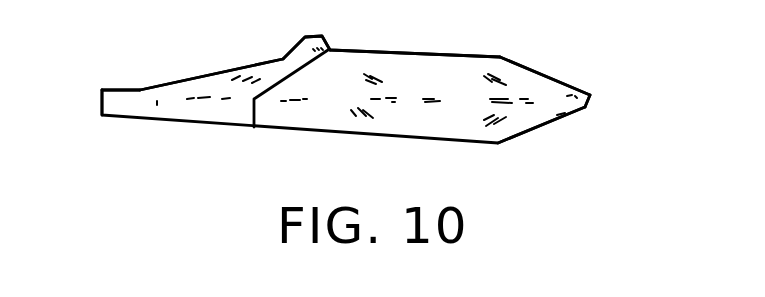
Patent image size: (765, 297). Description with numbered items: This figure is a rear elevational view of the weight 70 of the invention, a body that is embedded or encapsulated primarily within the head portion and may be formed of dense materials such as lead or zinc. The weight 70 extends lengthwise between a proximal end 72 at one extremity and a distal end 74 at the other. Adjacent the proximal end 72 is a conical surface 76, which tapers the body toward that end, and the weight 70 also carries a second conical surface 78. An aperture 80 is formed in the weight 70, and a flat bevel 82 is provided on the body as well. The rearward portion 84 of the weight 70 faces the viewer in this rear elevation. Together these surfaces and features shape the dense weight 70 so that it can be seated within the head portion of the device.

The weight 70 is at (455, 50).
The proximal end 72 is at (590, 104).
The distal end 74 is at (102, 100).
The conical surface 76 is at (557, 80).
The second conical surface 78 is at (398, 53).
The aperture 80 is at (330, 48).
The flat bevel 82 is at (212, 75).
The rearward portion 84 is at (130, 91).